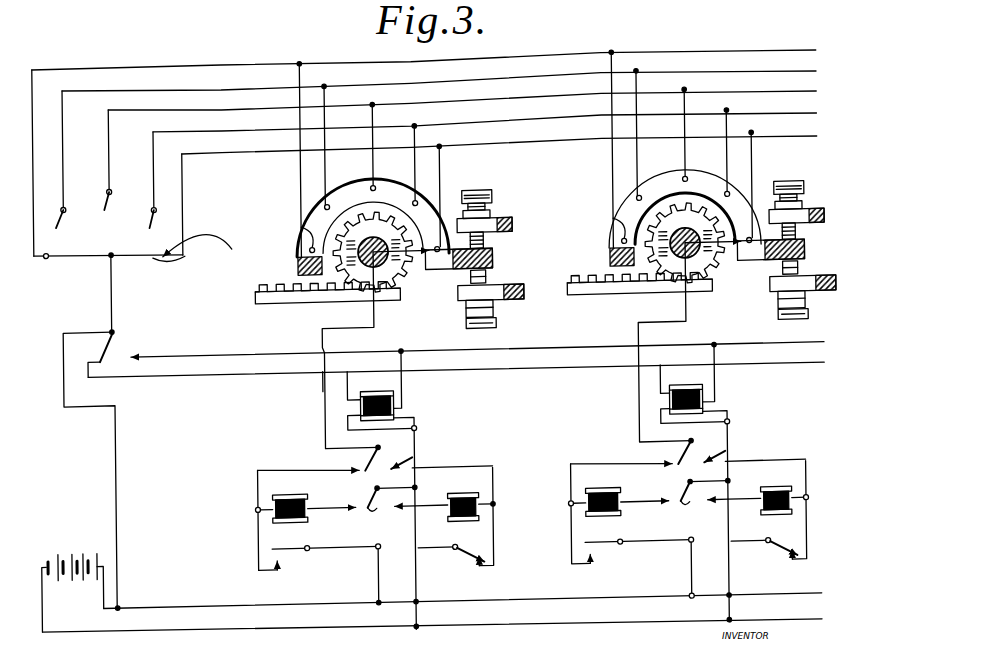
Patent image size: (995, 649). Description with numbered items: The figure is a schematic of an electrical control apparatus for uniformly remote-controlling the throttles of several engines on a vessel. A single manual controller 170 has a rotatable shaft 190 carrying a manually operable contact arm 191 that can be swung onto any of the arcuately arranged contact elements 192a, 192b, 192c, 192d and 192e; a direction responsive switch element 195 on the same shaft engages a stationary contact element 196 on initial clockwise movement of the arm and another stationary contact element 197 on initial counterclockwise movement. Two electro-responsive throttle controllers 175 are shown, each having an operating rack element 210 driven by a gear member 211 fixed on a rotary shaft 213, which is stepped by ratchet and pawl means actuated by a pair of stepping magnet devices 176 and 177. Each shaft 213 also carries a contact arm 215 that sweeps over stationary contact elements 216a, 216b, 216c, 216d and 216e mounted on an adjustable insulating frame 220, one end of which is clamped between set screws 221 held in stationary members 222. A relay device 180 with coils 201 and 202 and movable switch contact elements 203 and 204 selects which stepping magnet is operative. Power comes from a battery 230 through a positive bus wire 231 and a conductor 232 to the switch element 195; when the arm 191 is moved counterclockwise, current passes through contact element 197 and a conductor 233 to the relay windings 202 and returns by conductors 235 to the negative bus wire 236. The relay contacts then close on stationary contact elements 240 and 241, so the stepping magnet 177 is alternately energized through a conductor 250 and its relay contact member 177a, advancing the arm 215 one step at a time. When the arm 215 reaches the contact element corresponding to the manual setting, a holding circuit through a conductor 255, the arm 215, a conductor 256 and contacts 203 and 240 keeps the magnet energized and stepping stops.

The manual controller 170 is at (106, 261).
The electro-responsive throttle controller 175 is at (327, 286).
The stepping magnet device 176 is at (249, 517).
The stepping magnet device 177 is at (473, 506).
The relay contact member 177a is at (462, 564).
The relay device 180 is at (380, 404).
The rotatable shaft 190 is at (109, 271).
The manually operable contact arm 191 is at (192, 248).
The contact element 192a is at (225, 205).
The contact element 192b is at (150, 190).
The contact element 192c is at (103, 178).
The contact element 192d is at (56, 168).
The contact element 192e is at (43, 260).
The direction responsive switch element 195 is at (108, 348).
The stationary contact element 196 is at (93, 363).
The stationary contact element 197 is at (130, 364).
The relay coil 201 is at (341, 411).
The relay coil 202 is at (343, 432).
The switch contact element 203 is at (365, 465).
The switch contact element 204 is at (538, 512).
The operating rack element 210 is at (298, 312).
The gear member 211 is at (392, 302).
The rotary shaft 213 is at (380, 272).
The contact arm 215 is at (345, 319).
The stationary contact element 216a is at (442, 242).
The stationary contact element 216b is at (415, 212).
The stationary contact element 216c is at (383, 182).
The stationary contact element 216d is at (322, 214).
The stationary contact element 216e is at (300, 240).
The adjustable insulating frame 220 is at (490, 271).
The set screw 221 is at (508, 246).
The stationary member 222 is at (496, 236).
The battery 230 is at (69, 557).
The bus wire 231 is at (125, 611).
The conductor 232 is at (112, 463).
The conductor 233 is at (200, 382).
The return conductor 235 is at (412, 436).
The bus wire 236 is at (211, 635).
The stationary contact element 240 is at (399, 468).
The stationary contact element 241 is at (397, 520).
The conductor 250 is at (373, 570).
The conductor 255 is at (216, 116).
The conductor 256 is at (318, 390).